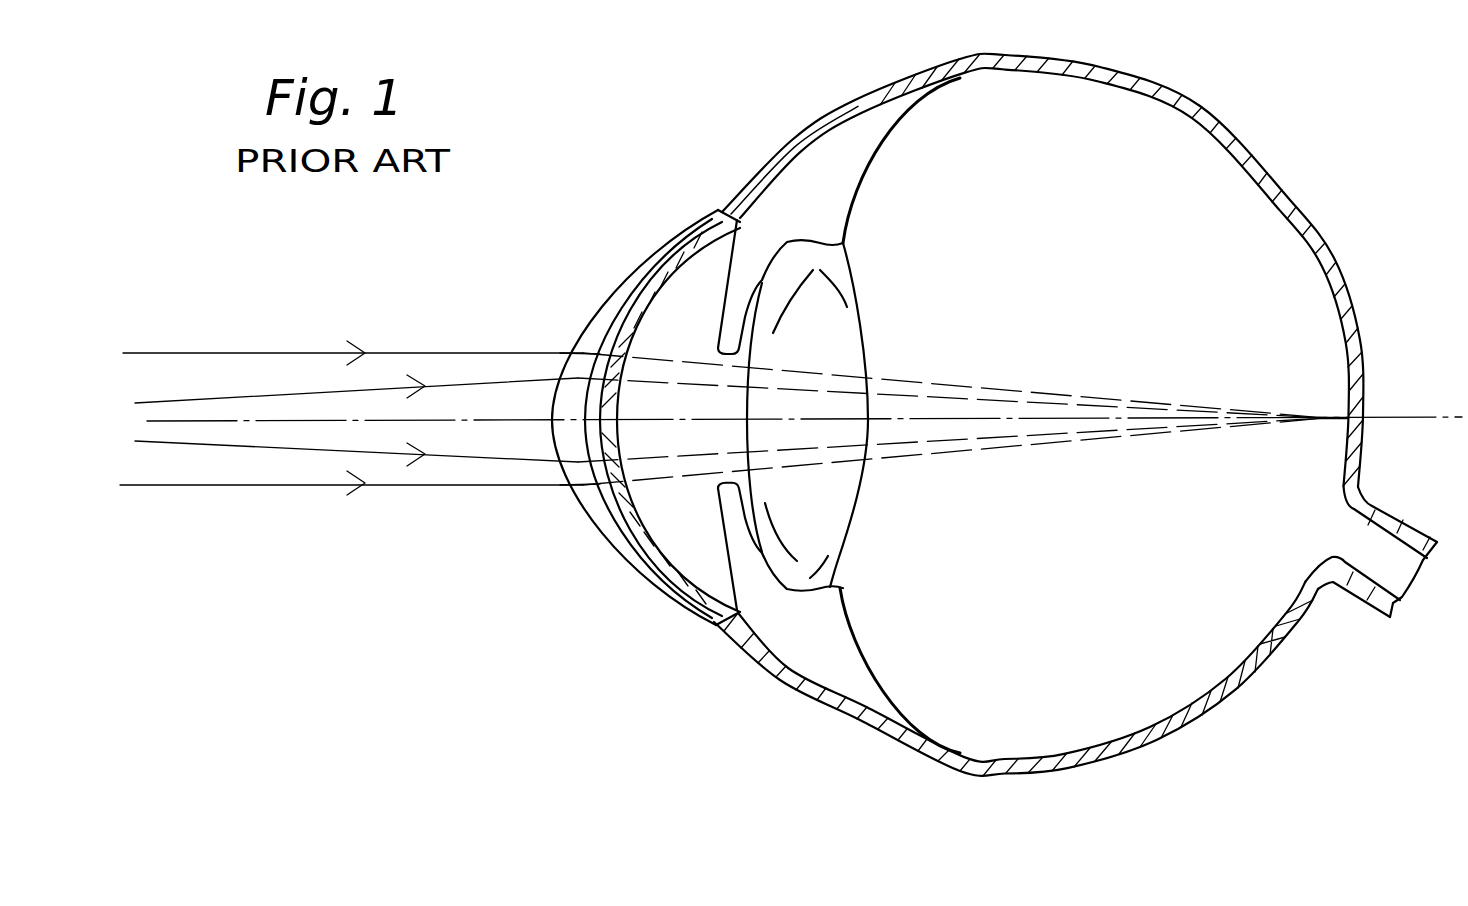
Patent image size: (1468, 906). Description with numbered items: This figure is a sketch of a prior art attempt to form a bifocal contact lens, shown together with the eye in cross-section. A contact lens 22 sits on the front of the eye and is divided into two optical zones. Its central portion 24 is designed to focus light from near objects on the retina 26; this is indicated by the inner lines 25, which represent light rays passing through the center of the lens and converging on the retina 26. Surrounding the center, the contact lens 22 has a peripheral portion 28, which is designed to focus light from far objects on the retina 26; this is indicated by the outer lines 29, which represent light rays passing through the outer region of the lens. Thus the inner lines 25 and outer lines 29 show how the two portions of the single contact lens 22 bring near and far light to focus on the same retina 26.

The contact lens 22 is at (608, 253).
The central portion 24 is at (557, 430).
The inner lines 25 is at (270, 393).
The retina 26 is at (1367, 413).
The peripheral portion 28 is at (558, 352).
The outer lines 29 is at (225, 352).